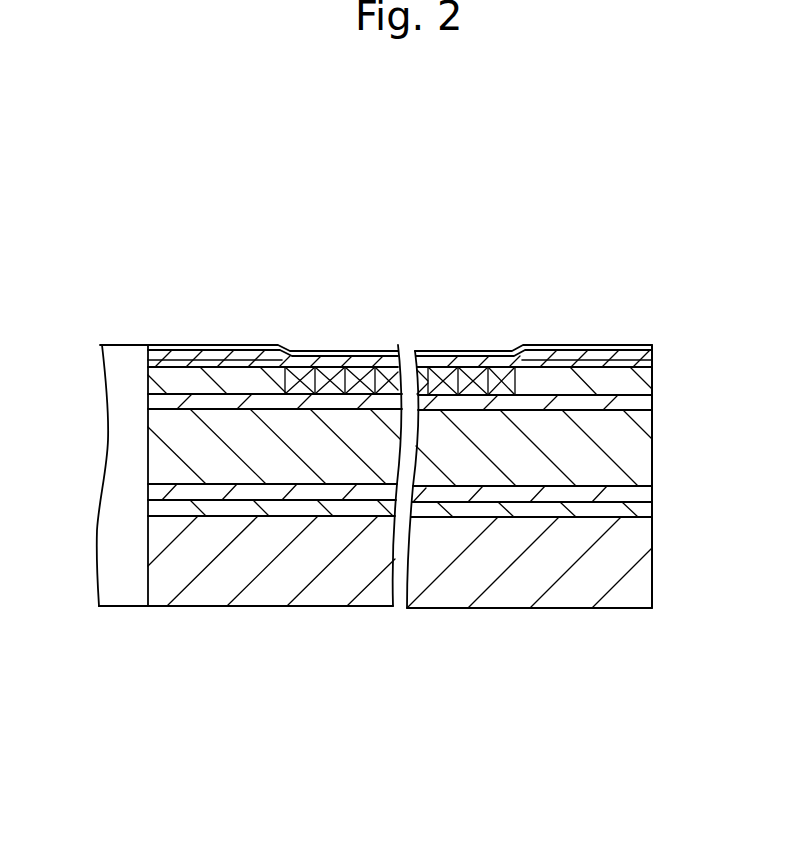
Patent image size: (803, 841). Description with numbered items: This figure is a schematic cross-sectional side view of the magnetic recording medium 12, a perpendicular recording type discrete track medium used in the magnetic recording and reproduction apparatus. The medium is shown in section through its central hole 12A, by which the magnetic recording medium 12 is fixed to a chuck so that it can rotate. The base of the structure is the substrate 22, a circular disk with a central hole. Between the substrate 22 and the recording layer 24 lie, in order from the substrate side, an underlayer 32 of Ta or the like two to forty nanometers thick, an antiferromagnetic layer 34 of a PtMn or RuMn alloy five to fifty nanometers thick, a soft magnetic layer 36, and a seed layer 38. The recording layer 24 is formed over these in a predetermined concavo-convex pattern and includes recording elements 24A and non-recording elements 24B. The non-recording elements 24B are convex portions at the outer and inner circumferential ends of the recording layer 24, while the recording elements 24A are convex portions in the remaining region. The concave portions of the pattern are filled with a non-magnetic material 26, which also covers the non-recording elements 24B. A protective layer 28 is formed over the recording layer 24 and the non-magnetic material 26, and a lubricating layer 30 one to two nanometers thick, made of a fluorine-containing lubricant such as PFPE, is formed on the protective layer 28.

The magnetic recording medium 12 is at (402, 188).
The central hole 12A is at (147, 460).
The substrate 22 is at (653, 560).
The recording layer 24 is at (666, 389).
The recording elements 24A is at (333, 376).
The non-recording elements 24B is at (248, 385).
The non-magnetic material 26 is at (193, 362).
The protective layer 28 is at (655, 356).
The lubricating layer 30 is at (655, 348).
The underlayer 32 is at (655, 513).
The antiferromagnetic layer 34 is at (655, 493).
The soft magnetic layer 36 is at (653, 458).
The seed layer 38 is at (655, 404).